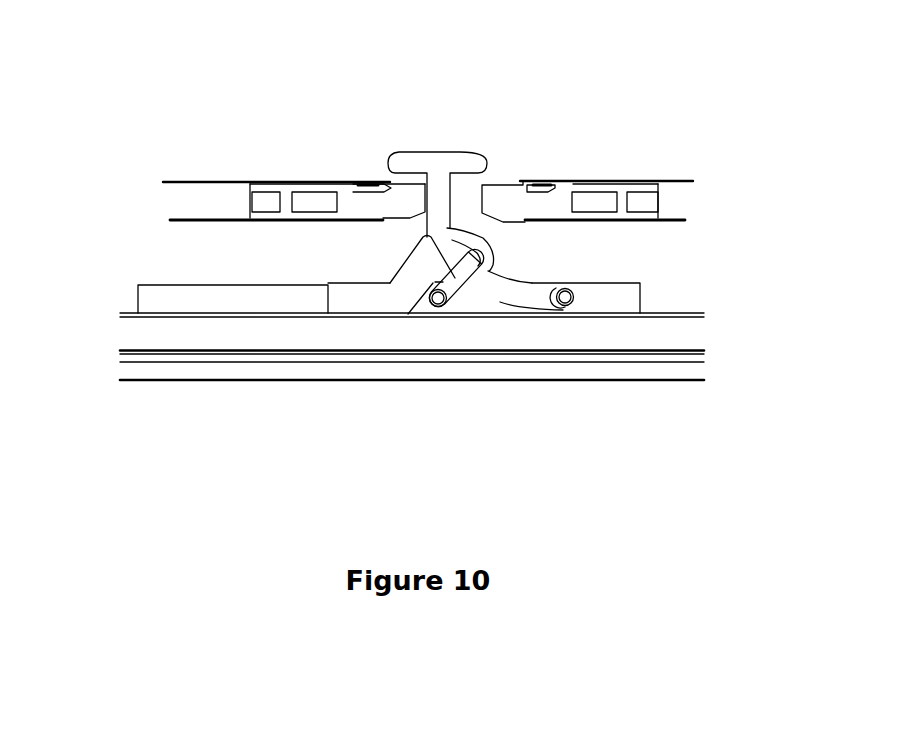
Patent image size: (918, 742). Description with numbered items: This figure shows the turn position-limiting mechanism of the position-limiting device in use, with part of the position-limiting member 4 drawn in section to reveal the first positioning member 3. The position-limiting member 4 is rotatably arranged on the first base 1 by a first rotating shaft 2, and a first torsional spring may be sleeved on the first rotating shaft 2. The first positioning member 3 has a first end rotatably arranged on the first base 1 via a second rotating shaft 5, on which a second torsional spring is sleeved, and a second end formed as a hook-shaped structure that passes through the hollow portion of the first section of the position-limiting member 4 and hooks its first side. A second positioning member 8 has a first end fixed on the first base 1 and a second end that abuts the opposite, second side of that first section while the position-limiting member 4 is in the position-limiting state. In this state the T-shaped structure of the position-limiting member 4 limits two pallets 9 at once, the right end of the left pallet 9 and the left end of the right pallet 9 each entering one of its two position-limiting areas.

The first base 1 is at (618, 298).
The first rotating shaft 2 is at (567, 300).
The first positioning member 3 is at (475, 266).
The position-limiting member 4 is at (430, 160).
The second rotating shaft 5 is at (437, 301).
The second positioning member 8 is at (377, 297).
The pallet 9 is at (355, 200).